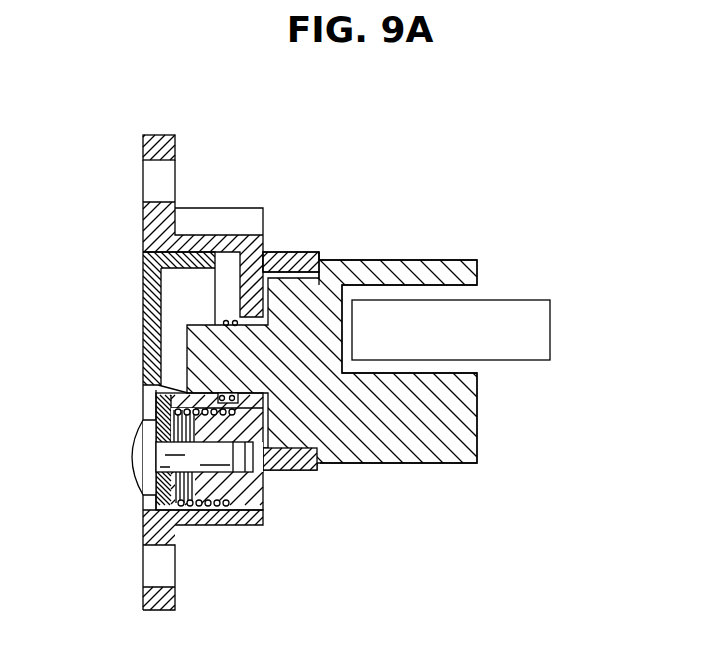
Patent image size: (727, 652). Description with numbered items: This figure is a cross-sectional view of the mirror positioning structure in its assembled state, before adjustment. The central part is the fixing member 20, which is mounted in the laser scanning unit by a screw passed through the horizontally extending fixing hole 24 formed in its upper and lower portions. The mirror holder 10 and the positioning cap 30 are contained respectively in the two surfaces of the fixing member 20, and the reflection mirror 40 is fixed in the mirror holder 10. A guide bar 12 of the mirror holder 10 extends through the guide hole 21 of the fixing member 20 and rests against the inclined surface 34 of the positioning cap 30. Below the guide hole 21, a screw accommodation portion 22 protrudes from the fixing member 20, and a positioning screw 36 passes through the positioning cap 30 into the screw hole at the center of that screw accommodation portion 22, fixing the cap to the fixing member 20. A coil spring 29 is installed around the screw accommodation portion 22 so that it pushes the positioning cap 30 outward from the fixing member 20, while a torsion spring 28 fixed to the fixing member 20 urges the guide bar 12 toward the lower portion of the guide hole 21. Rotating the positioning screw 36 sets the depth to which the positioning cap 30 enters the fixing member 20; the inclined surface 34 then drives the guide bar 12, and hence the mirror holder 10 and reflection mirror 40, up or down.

The mirror holder 10 is at (437, 268).
The guide bar 12 is at (232, 368).
The fixing member 20 is at (160, 145).
The guide hole 21 is at (316, 462).
The screw accommodation portion 22 is at (238, 497).
The fixing hole 24 is at (160, 188).
The torsion spring 28 is at (233, 300).
The coil spring 29 is at (240, 494).
The positioning cap 30 is at (145, 273).
The inclined surface 34 is at (157, 398).
The positioning screw 36 is at (137, 453).
The reflection mirror 40 is at (515, 325).